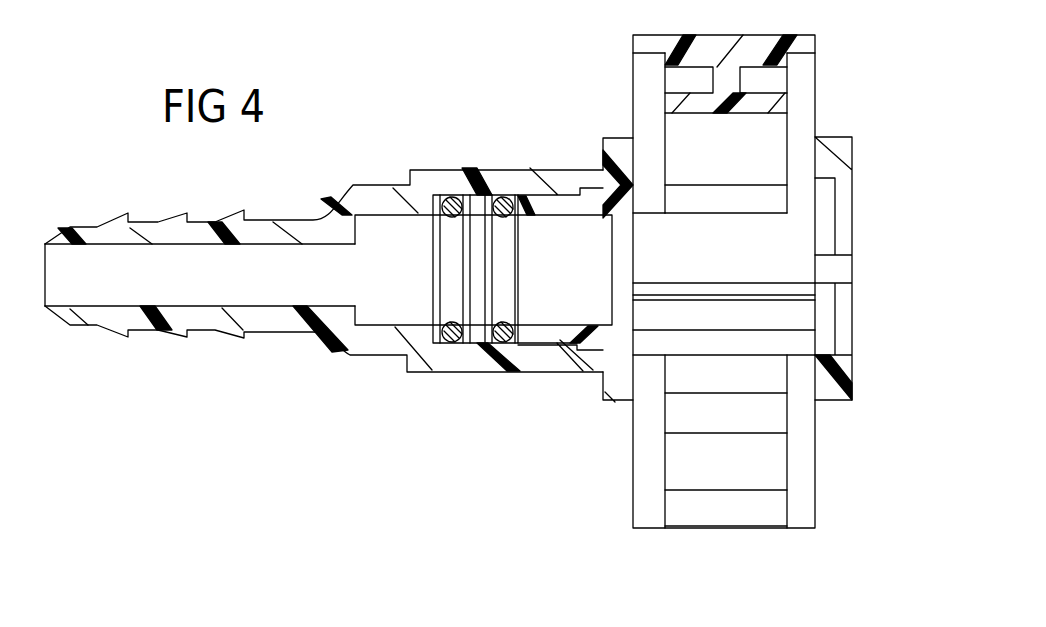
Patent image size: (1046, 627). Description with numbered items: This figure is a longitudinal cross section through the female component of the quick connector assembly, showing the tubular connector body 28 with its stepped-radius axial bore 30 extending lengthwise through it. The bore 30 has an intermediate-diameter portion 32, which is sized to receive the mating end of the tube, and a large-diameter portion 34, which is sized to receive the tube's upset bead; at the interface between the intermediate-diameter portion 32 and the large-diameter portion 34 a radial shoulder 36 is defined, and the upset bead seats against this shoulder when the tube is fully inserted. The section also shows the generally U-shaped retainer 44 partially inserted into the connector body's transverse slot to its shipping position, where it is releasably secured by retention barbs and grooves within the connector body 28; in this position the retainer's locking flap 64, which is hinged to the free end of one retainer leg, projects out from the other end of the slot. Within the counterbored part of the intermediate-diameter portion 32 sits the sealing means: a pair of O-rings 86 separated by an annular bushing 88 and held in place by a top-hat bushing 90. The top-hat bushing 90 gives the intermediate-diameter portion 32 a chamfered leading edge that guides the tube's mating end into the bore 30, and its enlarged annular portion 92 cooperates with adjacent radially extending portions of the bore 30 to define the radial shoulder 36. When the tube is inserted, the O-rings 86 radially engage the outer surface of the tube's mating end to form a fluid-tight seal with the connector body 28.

The connector body 28 is at (375, 363).
The axial bore 30 is at (712, 281).
The intermediate-diameter portion 32 is at (408, 326).
The large-diameter portion 34 is at (836, 343).
The radial shoulder 36 is at (625, 345).
The retainer 44 is at (624, 50).
The locking flap 64 is at (805, 493).
The O-rings 86 is at (443, 186).
The annular bushing 88 is at (472, 353).
The top-hat bushing 90 is at (546, 353).
The enlarged annular portion 92 is at (632, 348).